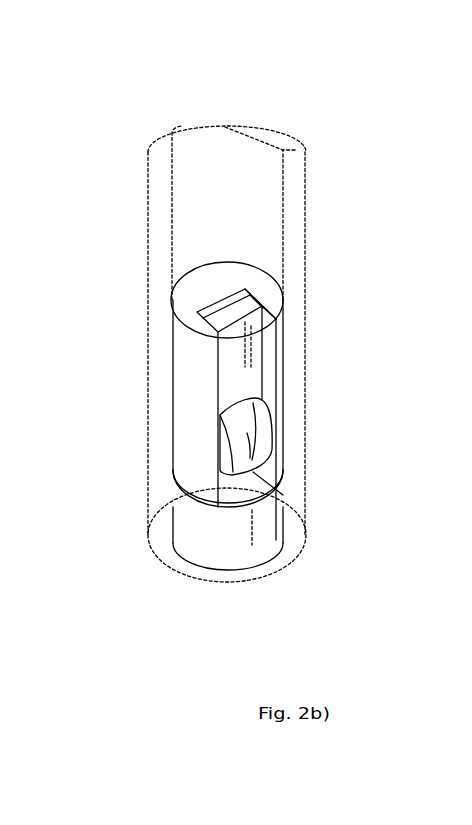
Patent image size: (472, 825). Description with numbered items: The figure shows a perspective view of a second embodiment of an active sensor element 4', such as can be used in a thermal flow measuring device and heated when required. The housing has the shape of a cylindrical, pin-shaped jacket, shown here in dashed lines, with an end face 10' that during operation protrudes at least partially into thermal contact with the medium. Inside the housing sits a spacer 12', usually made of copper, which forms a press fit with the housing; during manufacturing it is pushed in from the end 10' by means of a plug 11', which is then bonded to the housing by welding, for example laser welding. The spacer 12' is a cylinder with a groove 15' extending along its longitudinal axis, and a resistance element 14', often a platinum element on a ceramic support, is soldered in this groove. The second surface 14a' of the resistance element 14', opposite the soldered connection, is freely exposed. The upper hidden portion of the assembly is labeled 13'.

The sensor element 4' is at (183, 98).
The end face 10' is at (227, 409).
The plug 11' is at (216, 571).
The spacer 12' is at (182, 384).
The tube upper portion 13' is at (187, 213).
The resistance element 14' is at (177, 414).
The second surface 14a' is at (294, 408).
The groove 15' is at (252, 268).